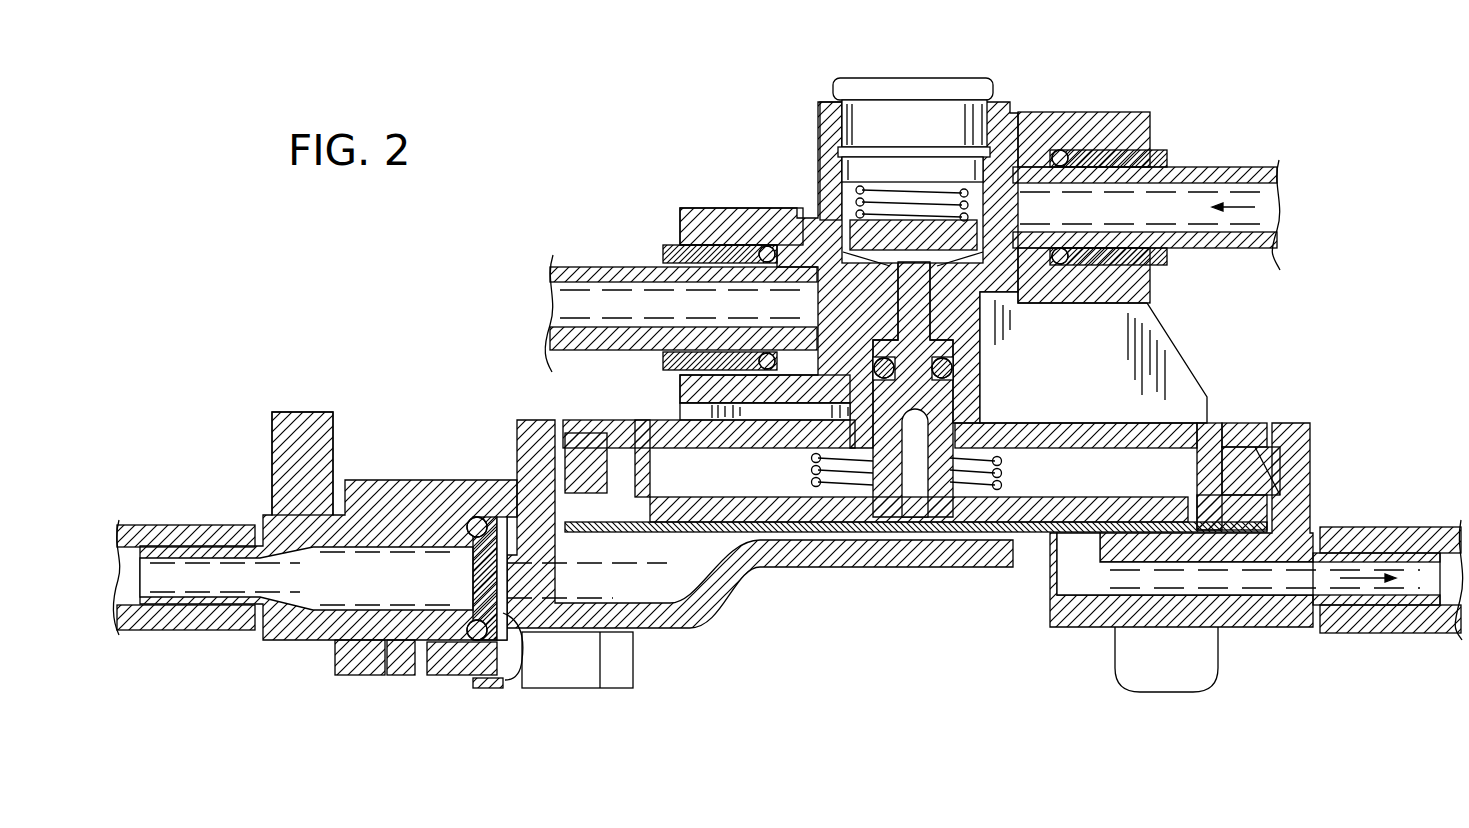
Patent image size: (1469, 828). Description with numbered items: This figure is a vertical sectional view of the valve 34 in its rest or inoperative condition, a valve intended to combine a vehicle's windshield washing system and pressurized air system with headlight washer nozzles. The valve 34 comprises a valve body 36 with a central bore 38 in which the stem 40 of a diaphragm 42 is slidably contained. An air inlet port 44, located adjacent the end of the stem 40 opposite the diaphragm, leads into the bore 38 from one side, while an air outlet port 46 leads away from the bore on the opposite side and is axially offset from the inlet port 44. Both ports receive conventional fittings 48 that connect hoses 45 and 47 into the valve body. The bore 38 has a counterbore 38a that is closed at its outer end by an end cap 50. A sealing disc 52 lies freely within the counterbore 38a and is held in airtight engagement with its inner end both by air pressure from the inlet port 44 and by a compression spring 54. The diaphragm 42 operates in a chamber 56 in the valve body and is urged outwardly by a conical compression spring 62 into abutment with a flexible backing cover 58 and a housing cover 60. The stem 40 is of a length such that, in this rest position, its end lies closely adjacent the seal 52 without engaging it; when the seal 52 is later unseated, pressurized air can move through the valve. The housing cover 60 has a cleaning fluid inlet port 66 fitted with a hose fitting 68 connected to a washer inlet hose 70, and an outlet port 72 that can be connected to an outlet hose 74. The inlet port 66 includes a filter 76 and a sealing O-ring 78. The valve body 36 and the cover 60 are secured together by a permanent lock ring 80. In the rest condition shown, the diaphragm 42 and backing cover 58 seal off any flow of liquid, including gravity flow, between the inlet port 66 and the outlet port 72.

The valve 34 is at (815, 72).
The valve body 36 is at (1147, 392).
The central bore 38 is at (955, 378).
The counterbore 38a is at (838, 150).
The stem 40 is at (945, 418).
The diaphragm 42 is at (802, 513).
The air inlet port 44 is at (1085, 112).
The hose 45 is at (1225, 167).
The air outlet port 46 is at (705, 208).
The hose 47 is at (578, 267).
The fittings 48 is at (1155, 150).
The end cap 50 is at (905, 78).
The sealing disc 52 is at (850, 228).
The compression spring 54 is at (878, 182).
The chamber 56 is at (750, 480).
The flexible backing cover 58 is at (993, 532).
The housing cover 60 is at (930, 568).
The conical compression spring 62 is at (858, 472).
The cleaning fluid inlet port 66 is at (395, 480).
The hose fitting 68 is at (268, 497).
The washer inlet hose 70 is at (177, 525).
The outlet port 72 is at (1258, 627).
The outlet hose 74 is at (1428, 527).
The filter 76 is at (510, 640).
The sealing O-ring 78 is at (477, 642).
The permanent lock ring 80 is at (1240, 420).